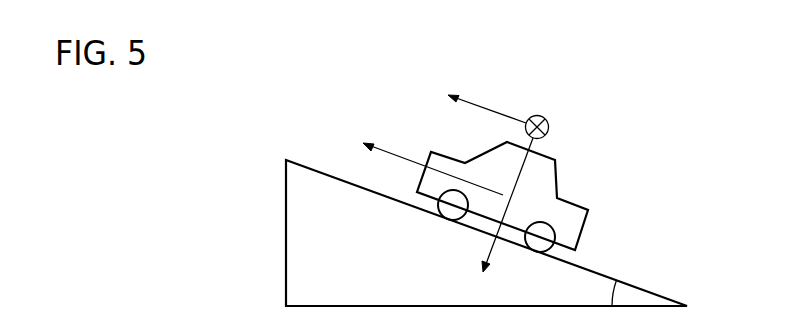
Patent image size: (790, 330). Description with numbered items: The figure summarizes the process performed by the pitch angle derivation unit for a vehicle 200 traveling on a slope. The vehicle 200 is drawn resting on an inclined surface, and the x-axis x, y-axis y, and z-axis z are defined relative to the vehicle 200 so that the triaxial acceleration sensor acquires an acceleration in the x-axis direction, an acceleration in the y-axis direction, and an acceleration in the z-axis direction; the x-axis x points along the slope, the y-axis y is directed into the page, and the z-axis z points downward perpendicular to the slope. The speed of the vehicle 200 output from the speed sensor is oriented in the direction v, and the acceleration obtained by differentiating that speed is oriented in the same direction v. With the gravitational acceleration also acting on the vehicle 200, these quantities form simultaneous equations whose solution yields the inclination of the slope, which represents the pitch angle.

The vehicle 200 is at (560, 173).
The x-axis x is at (478, 101).
The y-axis y is at (548, 129).
The z-axis z is at (504, 218).
The speed direction v is at (413, 169).